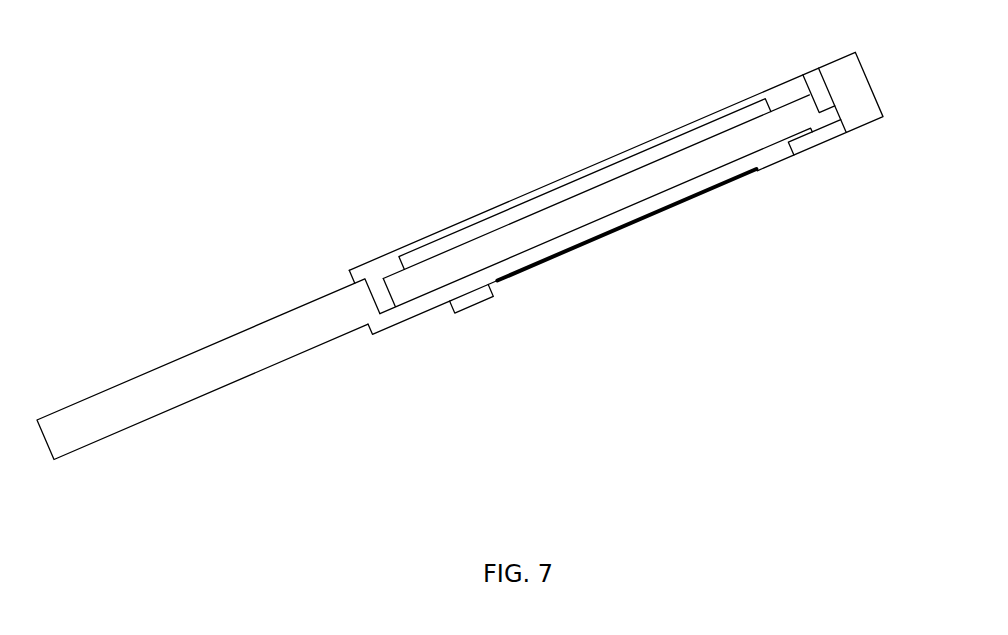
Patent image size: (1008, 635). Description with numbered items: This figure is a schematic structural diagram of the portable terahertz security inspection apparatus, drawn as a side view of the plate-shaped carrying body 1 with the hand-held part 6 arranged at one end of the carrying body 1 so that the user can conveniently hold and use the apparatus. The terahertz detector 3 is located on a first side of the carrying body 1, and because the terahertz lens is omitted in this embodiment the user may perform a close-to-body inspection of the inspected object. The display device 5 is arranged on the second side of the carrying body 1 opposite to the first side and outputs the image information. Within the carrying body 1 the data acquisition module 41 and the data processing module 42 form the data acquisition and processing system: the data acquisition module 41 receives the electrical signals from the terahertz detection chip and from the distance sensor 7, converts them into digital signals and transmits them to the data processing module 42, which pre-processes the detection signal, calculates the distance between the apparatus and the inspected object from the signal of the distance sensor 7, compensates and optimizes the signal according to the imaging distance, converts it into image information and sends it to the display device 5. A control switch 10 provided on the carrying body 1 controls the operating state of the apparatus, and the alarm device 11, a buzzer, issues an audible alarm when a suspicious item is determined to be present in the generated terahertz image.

The carrying body 1 is at (367, 273).
The terahertz detector 3 is at (741, 103).
The display device 5 is at (671, 220).
The hand-held part 6 is at (127, 395).
The distance sensor 7 is at (807, 82).
The control switch 10 is at (468, 312).
The alarm device 11 is at (816, 158).
The data acquisition module 41 is at (474, 227).
The data processing module 42 is at (614, 187).